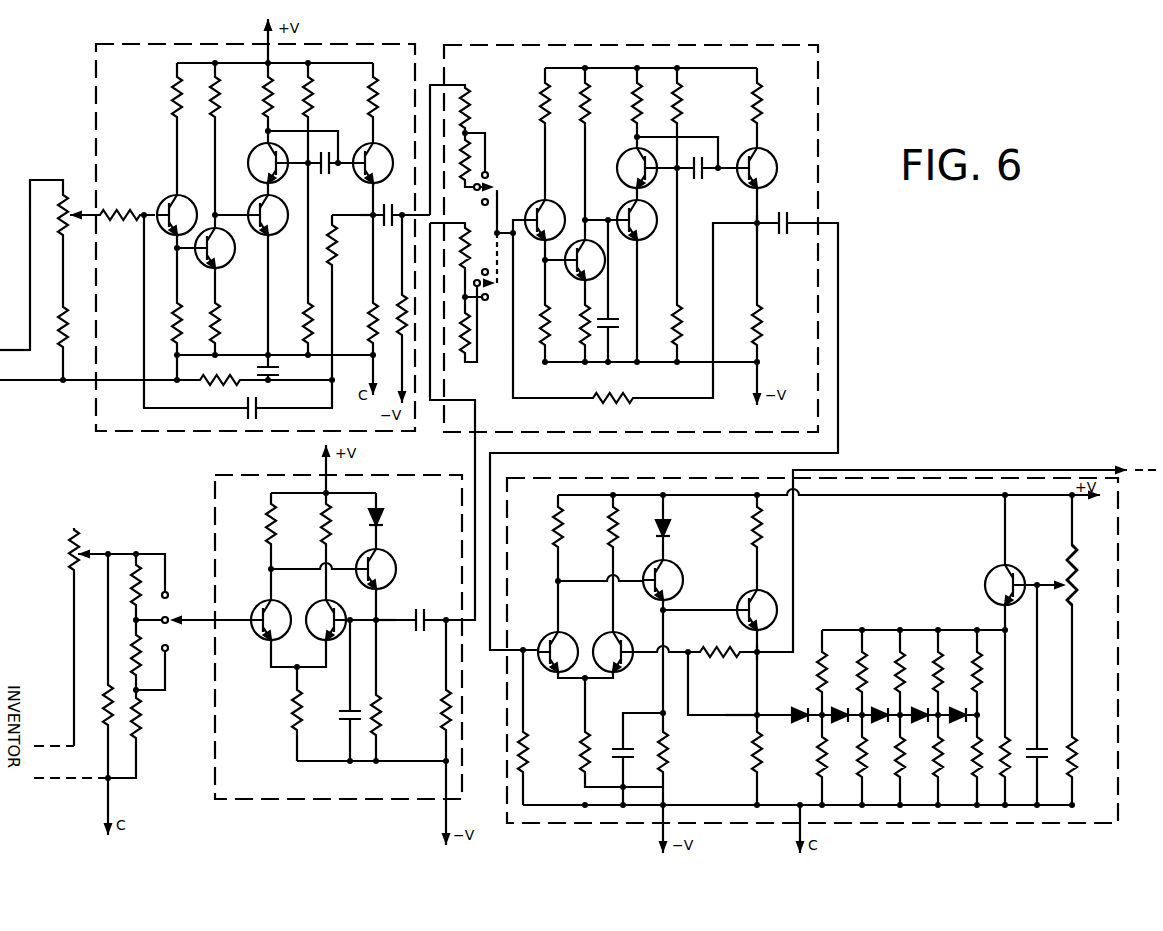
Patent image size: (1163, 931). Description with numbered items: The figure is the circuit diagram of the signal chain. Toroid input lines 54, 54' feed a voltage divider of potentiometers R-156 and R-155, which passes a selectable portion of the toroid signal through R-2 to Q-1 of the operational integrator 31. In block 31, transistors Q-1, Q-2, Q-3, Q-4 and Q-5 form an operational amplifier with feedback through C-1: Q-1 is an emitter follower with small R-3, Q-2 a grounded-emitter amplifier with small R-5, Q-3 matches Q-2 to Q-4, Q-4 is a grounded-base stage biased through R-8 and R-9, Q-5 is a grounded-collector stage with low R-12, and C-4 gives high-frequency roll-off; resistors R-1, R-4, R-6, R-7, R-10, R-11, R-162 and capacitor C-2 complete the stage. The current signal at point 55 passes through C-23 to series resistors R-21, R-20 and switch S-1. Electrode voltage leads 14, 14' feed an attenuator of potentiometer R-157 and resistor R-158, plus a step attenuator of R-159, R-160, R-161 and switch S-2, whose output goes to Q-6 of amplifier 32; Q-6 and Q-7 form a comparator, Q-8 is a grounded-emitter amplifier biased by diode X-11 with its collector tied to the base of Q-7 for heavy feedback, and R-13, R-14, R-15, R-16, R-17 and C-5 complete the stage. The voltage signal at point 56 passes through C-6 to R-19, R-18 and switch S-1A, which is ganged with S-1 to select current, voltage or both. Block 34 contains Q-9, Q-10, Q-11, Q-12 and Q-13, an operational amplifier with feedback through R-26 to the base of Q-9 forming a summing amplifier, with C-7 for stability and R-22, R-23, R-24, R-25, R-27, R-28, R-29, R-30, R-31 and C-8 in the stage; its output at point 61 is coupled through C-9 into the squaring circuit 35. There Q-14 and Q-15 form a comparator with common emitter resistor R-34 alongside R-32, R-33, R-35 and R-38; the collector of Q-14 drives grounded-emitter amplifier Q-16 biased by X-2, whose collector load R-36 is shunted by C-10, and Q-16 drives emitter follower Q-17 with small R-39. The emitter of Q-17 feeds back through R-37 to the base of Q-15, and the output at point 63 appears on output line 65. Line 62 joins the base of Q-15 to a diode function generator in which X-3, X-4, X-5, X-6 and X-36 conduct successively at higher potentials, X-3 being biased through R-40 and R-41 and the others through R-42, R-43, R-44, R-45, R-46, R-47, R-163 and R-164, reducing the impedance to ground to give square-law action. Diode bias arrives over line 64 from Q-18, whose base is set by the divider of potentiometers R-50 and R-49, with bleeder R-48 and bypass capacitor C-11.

The operational integrator 31 is at (96, 100).
The amplifier 32 is at (215, 532).
The gain control amplifier stage 34 is at (818, 122).
The squaring circuit 35 is at (628, 476).
The point 55 is at (368, 225).
The point 56 is at (380, 624).
The point 61 is at (757, 232).
The line 62 is at (735, 714).
The point 63 is at (759, 654).
The line 64 is at (915, 628).
The line 65 is at (1025, 468).
The lead 14 is at (54, 730).
The lead 14' is at (71, 793).
The input line 54 is at (15, 333).
The input line 54' is at (20, 392).
The resistor R-1 is at (168, 323).
The resistor R-2 is at (120, 205).
The resistor R-3 is at (168, 97).
The resistor R-4 is at (220, 371).
The resistor R-5 is at (206, 323).
The resistor R-6 is at (206, 97).
The resistor R-7 is at (259, 97).
The resistor R-8 is at (299, 323).
The resistor R-9 is at (299, 97).
The resistor R-10 is at (323, 245).
The resistor R-11 is at (364, 323).
The resistor R-12 is at (364, 97).
The resistor R-13 is at (288, 710).
The resistor R-14 is at (262, 524).
The resistor R-15 is at (317, 524).
The resistor R-16 is at (383, 715).
The resistor R-17 is at (437, 710).
The series resistor R-18 is at (456, 333).
The series resistor R-19 is at (456, 248).
The series resistor R-20 is at (456, 160).
The series resistor R-21 is at (456, 108).
The resistor R-22 is at (536, 325).
The resistor R-23 is at (536, 103).
The resistor R-24 is at (576, 325).
The resistor R-25 is at (576, 103).
The feedback resistor R-26 is at (613, 407).
The resistor R-27 is at (628, 103).
The resistor R-28 is at (668, 325).
The resistor R-29 is at (668, 103).
The resistor R-30 is at (748, 325).
The resistor R-31 is at (748, 103).
The resistor R-32 is at (534, 752).
The resistor R-33 is at (549, 527).
The common emitter resistor R-34 is at (575, 752).
The resistor R-35 is at (604, 527).
The collector load R-36 is at (654, 752).
The feedback resistor R-37 is at (720, 641).
The resistor R-38 is at (745, 752).
The resistor R-39 is at (748, 527).
The resistor R-40 is at (811, 757).
The resistor R-41 is at (812, 672).
The resistor R-42 is at (852, 757).
The resistor R-43 is at (852, 672).
The resistor R-44 is at (891, 757).
The resistor R-45 is at (891, 672).
The resistor R-46 is at (930, 757).
The resistor R-47 is at (930, 672).
The bleeder R-48 is at (998, 757).
The potentiometer R-49 is at (1083, 757).
The potentiometer R-50 is at (1083, 575).
The potentiometer R-155 is at (53, 327).
The potentiometer R-156 is at (53, 215).
The potentiometer R-157 is at (63, 550).
The resistor R-158 is at (98, 705).
The resistor R-159 is at (149, 718).
The resistor R-160 is at (129, 655).
The resistor R-161 is at (129, 585).
The resistor R-162 is at (393, 311).
The resistor R-163 is at (968, 757).
The resistor R-164 is at (968, 672).
The feedback capacitor C-1 is at (258, 413).
The capacitor C-2 is at (282, 371).
The capacitor C-4 is at (324, 172).
The capacitor C-5 is at (338, 707).
The capacitor C-6 is at (418, 609).
The capacitor C-7 is at (617, 317).
The capacitor C-8 is at (698, 179).
The capacitor C-9 is at (785, 214).
The capacitor C-10 is at (615, 744).
The bypass capacitor C-11 is at (1028, 741).
The capacitor C-23 is at (392, 204).
The transistor Q-1 is at (170, 205).
The transistor Q-2 is at (221, 250).
The transistor Q-3 is at (256, 209).
The transistor Q-4 is at (256, 155).
The transistor Q-5 is at (379, 155).
The transistor Q-6 is at (259, 612).
The transistor Q-7 is at (316, 613).
The transistor Q-8 is at (384, 565).
The transistor Q-9 is at (549, 210).
The transistor Q-10 is at (582, 268).
The transistor Q-11 is at (624, 216).
The transistor Q-12 is at (625, 159).
The transistor Q-13 is at (767, 160).
The transistor Q-14 is at (545, 640).
The transistor Q-15 is at (602, 642).
The transistor Q-16 is at (678, 575).
The transistor Q-17 is at (765, 603).
The transistor Q-18 is at (989, 576).
The diode X-2 is at (676, 521).
The diode X-3 is at (788, 707).
The diode X-4 is at (840, 706).
The diode X-5 is at (880, 706).
The diode X-6 is at (918, 706).
The diode X-11 is at (394, 511).
The diode X-36 is at (957, 706).
The selector switch S-1 is at (494, 184).
The switch S-1A is at (496, 292).
The switch S-2 is at (178, 621).